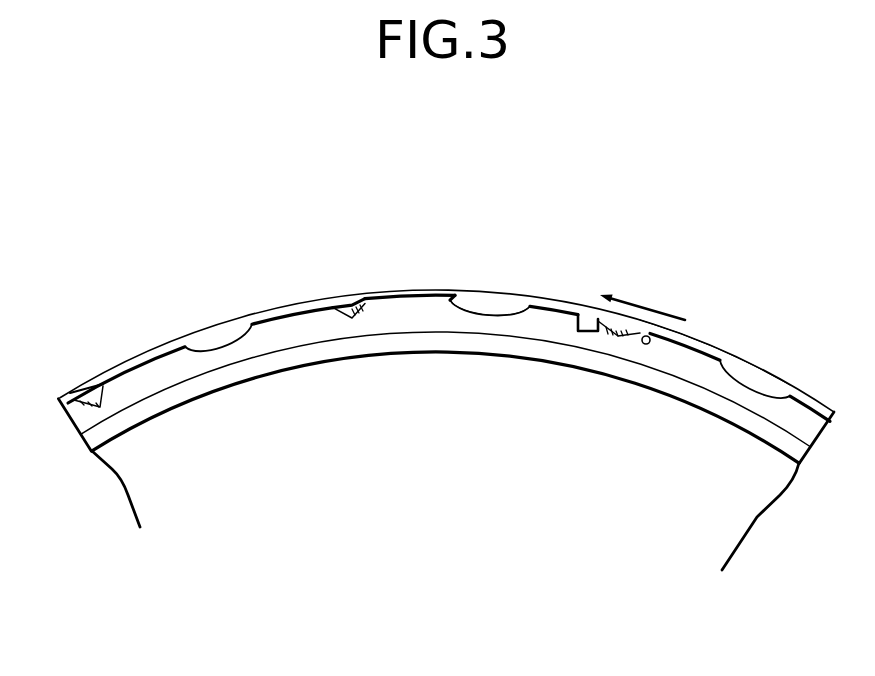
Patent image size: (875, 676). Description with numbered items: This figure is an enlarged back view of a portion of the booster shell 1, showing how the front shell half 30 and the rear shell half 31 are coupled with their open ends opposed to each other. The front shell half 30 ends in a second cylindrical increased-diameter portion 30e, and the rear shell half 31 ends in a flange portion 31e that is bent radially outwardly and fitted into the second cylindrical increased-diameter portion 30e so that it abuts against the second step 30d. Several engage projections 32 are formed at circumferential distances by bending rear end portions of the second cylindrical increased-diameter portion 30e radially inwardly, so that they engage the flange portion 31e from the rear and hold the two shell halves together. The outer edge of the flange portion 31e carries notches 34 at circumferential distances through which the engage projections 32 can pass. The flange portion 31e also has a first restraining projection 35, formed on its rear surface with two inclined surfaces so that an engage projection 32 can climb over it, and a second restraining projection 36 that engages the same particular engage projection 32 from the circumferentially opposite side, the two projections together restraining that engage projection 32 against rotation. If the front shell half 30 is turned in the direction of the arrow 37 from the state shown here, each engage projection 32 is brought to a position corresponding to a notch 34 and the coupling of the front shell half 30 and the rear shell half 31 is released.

The booster shell 1 is at (190, 263).
The front shell half 30 is at (130, 347).
The second step 30d is at (503, 310).
The second cylindrical increased-diameter portion 30e is at (407, 292).
The rear shell half 31 is at (211, 349).
The flange portion 31e is at (693, 367).
The engage projections 32 is at (100, 396).
The notches 34 is at (240, 328).
The first restraining projection 35 is at (590, 318).
The second restraining projection 36 is at (647, 345).
The arrow 37 is at (650, 307).